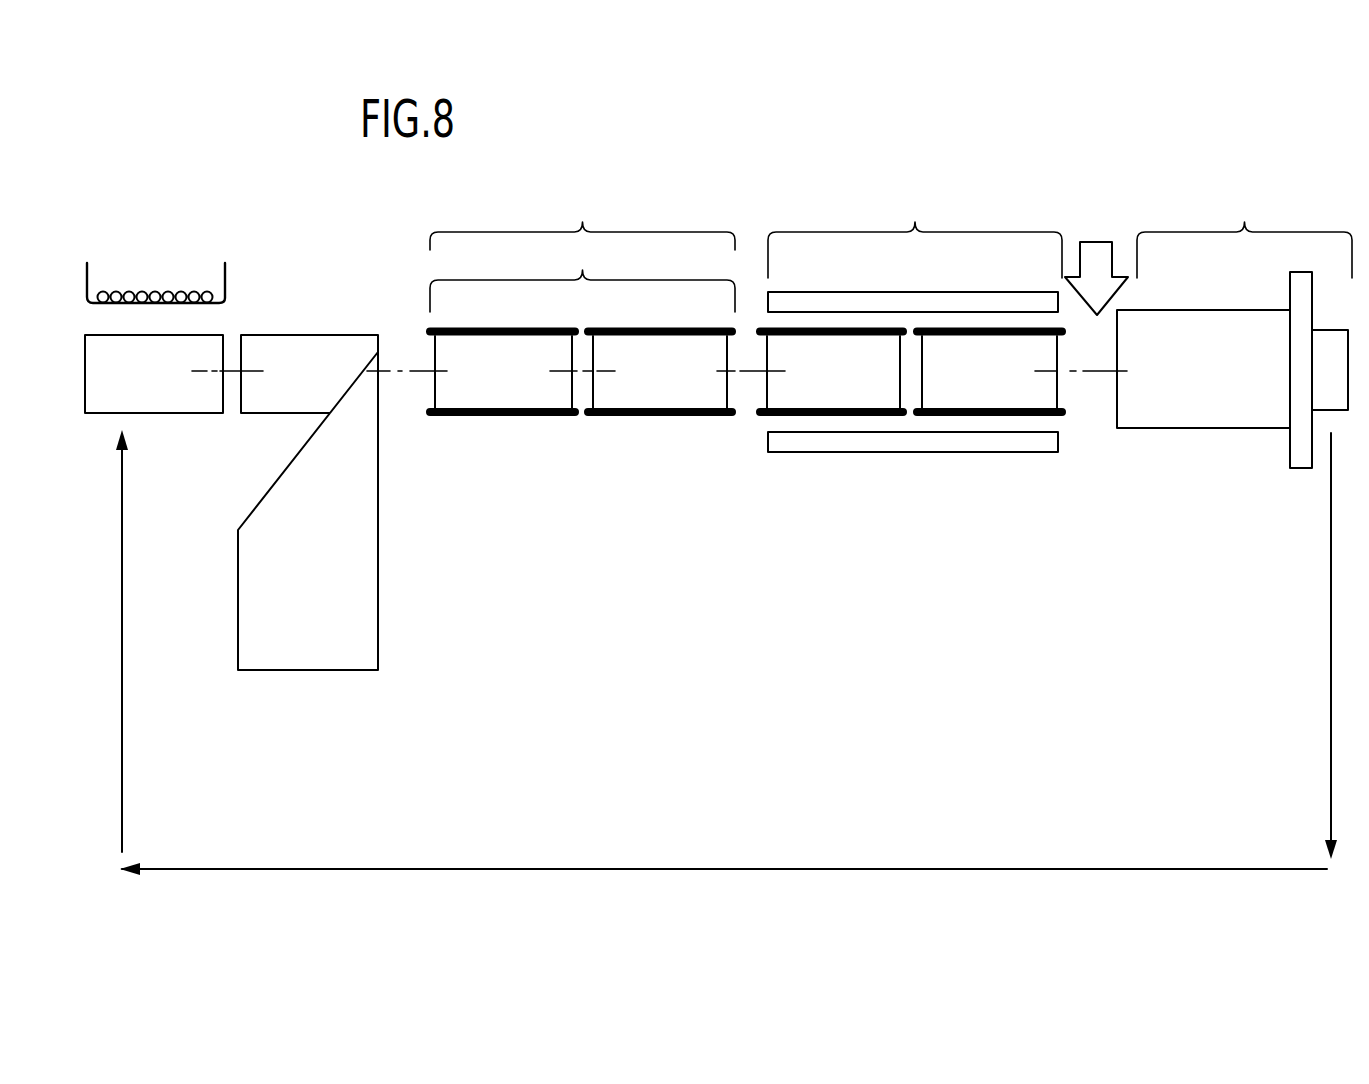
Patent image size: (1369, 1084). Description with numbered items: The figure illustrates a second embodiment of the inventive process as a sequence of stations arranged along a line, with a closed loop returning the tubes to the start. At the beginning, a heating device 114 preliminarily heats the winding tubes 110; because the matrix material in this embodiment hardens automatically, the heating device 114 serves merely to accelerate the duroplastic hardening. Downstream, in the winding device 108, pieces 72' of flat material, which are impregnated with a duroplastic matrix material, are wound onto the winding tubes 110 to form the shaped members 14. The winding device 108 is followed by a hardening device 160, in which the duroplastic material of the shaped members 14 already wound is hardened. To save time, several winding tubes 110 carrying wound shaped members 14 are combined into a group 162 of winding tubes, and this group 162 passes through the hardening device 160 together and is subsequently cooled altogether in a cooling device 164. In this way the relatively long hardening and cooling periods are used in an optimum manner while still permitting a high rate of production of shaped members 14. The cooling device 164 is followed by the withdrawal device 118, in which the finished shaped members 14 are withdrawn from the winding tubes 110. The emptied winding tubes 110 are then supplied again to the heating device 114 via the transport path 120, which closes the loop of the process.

The shaped member 14 is at (538, 413).
The piece of flat material 72' is at (408, 606).
The winding device 108 is at (259, 312).
The winding tube 110 is at (332, 347).
The heating device 114 is at (68, 281).
The withdrawal device 118 is at (1208, 326).
The transport path 120 is at (1130, 870).
The hardening device 160 is at (582, 218).
The group of winding tubes 162 is at (582, 276).
The cooling device 164 is at (915, 319).